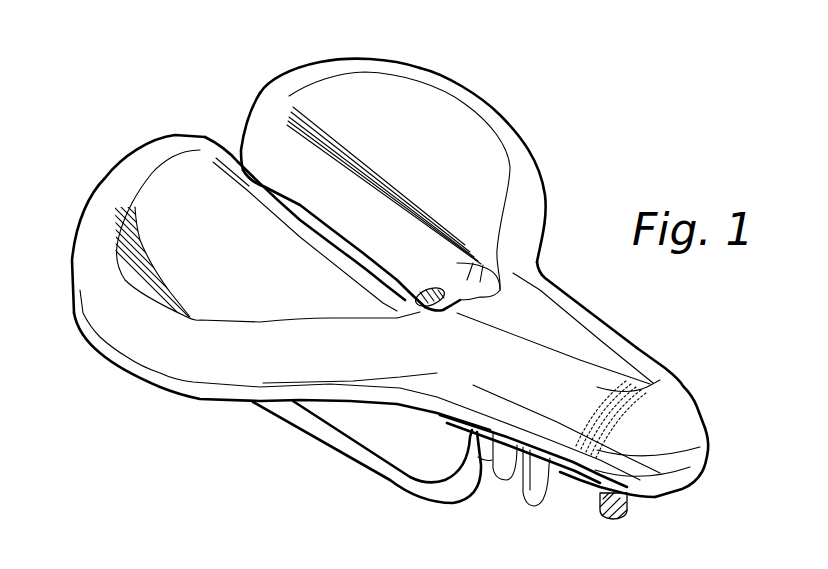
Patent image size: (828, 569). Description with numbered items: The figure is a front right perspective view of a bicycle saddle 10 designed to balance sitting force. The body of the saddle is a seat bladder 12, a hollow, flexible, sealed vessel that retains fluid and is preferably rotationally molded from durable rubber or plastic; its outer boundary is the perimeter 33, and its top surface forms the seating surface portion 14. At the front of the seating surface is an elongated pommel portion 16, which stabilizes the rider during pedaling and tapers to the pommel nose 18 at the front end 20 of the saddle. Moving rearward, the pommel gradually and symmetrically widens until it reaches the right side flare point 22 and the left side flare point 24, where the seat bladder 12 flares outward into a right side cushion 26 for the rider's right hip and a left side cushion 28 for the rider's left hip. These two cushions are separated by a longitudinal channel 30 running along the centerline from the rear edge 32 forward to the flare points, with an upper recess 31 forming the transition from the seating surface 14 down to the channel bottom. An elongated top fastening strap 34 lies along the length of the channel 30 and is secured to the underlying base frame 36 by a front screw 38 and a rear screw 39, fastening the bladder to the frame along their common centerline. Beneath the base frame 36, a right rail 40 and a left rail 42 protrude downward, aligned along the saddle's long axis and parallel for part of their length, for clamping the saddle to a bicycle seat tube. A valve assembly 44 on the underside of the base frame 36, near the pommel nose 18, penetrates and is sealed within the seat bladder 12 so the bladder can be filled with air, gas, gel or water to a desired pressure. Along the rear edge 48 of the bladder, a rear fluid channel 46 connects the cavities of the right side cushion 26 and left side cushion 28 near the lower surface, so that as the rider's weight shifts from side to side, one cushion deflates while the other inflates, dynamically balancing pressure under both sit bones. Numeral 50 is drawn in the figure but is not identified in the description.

The bicycle saddle 10 is at (150, 32).
The seat bladder 12 is at (113, 367).
The seating surface portion 14 is at (471, 120).
The pommel portion 16 is at (660, 363).
The pommel nose 18 is at (697, 393).
The front end 20 is at (693, 486).
The right side flare point 22 is at (383, 407).
The left side flare point 24 is at (543, 268).
The right side cushion 26 is at (237, 240).
The left side cushion 28 is at (384, 185).
The longitudinal channel 30 is at (263, 173).
The upper recess 31 is at (257, 153).
The rear edge 32 is at (273, 77).
The perimeter 33 is at (432, 72).
The top fastening strap 34 is at (383, 263).
The base frame 36 is at (577, 488).
The front screw 38 is at (450, 287).
The rear screw 39 is at (310, 203).
The right rail 40 is at (287, 421).
The left rail 42 is at (509, 481).
The valve assembly 44 is at (630, 507).
The rear fluid channel 46 is at (230, 152).
The rear edge 48 is at (233, 153).
The pad junction 50 is at (453, 303).